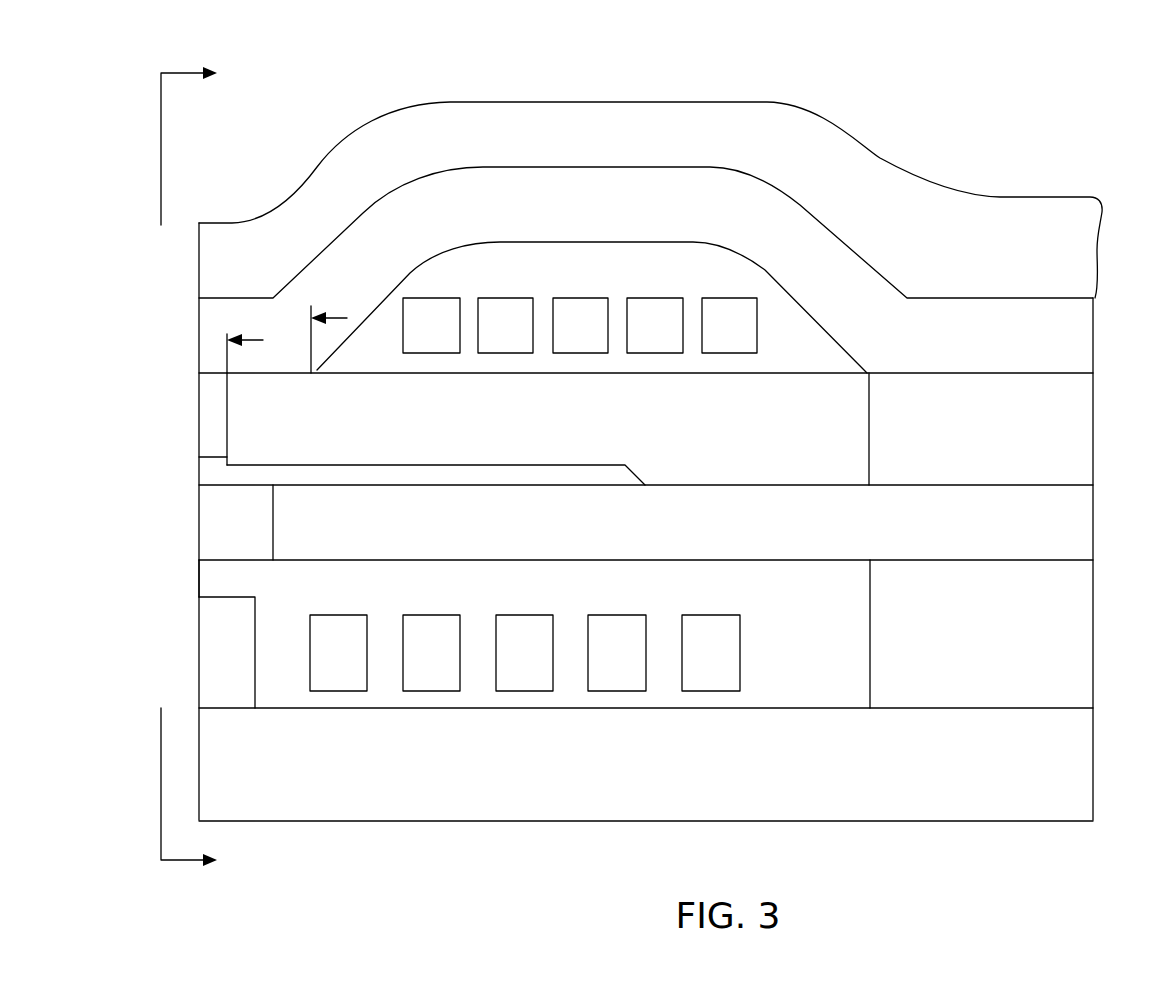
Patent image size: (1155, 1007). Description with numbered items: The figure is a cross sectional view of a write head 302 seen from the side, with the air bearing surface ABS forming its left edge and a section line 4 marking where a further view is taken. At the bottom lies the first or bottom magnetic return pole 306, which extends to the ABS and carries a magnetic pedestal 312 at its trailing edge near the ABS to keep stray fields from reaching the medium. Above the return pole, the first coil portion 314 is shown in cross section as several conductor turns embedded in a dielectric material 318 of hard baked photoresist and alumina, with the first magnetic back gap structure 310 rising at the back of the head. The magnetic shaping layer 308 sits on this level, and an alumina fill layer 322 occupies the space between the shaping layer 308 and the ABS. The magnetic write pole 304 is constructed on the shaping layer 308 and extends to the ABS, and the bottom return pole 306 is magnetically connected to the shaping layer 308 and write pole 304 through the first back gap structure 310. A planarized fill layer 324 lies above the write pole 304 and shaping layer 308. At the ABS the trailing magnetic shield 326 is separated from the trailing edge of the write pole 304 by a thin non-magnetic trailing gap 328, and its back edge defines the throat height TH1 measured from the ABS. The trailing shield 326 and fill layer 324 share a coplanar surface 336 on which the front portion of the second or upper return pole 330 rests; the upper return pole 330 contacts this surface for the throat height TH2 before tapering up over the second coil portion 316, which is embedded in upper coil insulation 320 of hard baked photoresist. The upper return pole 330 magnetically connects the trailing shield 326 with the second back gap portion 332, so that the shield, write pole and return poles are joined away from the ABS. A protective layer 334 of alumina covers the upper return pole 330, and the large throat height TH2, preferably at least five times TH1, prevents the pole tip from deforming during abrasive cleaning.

The write head 302 is at (842, 95).
The magnetic write pole 304 is at (471, 476).
The first or bottom magnetic return pole 306 is at (656, 767).
The magnetic shaping layer 308 is at (646, 536).
The first magnetic back gap structure 310 is at (1026, 634).
The magnetic pedestal 312 is at (215, 645).
The first coil portion 314 is at (525, 653).
The second coil portion 316 is at (580, 325).
The dielectric material 318 is at (580, 588).
The upper coil insulation 320 is at (607, 276).
The alumina fill layer 322 is at (226, 522).
The planarized fill layer 324 is at (535, 422).
The trailing magnetic shield 326 is at (205, 413).
The trailing gap 328 is at (205, 463).
The second or upper return pole 330 is at (612, 205).
The second back gap portion 332 is at (910, 429).
The protective layer 334 is at (603, 137).
The coplanar surface 336 is at (347, 374).
The throat height of trailing shield TH1 is at (190, 340).
The throat height of upper return pole TH2 is at (190, 318).
The air bearing surface ABS is at (199, 577).
The section line 4- 4 is at (202, 467).